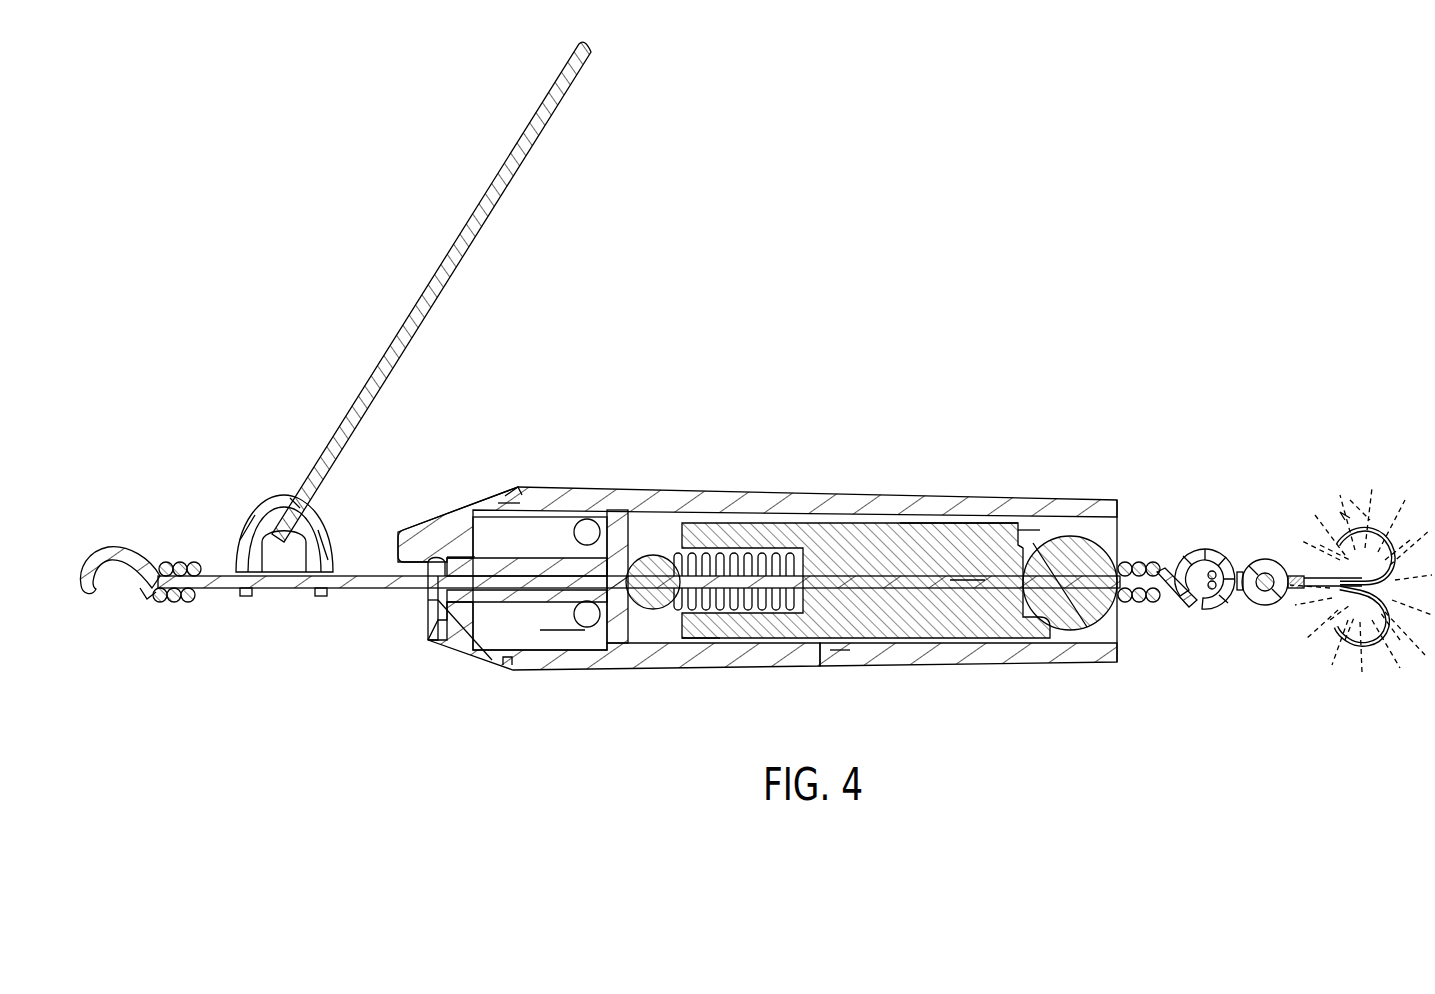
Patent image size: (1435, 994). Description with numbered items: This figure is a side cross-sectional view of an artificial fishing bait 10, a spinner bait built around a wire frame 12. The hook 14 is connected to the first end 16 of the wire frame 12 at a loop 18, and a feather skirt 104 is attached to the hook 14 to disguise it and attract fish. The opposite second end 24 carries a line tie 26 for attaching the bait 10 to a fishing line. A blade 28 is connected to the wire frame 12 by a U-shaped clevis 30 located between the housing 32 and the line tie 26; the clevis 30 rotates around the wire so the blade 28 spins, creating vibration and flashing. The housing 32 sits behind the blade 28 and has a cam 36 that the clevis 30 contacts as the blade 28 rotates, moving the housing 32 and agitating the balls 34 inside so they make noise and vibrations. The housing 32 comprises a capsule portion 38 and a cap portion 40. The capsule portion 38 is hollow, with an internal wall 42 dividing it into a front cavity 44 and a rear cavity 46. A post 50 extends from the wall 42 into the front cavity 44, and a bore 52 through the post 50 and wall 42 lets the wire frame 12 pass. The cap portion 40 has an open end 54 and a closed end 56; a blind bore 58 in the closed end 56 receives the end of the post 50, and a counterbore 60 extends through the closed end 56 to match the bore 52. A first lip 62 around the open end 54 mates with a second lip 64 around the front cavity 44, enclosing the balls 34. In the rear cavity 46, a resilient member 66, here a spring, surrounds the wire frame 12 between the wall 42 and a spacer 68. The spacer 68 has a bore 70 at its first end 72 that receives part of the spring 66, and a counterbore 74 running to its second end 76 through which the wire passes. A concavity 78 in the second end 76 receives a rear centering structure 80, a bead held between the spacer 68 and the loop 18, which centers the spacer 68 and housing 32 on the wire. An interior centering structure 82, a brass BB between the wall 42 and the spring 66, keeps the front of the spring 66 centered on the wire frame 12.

The artificial fishing bait 10 is at (796, 434).
The wire frame 12 is at (890, 590).
The hook 14 is at (1348, 525).
The first end 16 is at (1203, 622).
The loop 18 is at (1203, 552).
The second end 24 is at (178, 641).
The line tie 26 is at (127, 548).
The blade 28 is at (465, 262).
The clevis 30 is at (312, 520).
The housing 32 is at (618, 655).
The ball 34 is at (592, 520).
The cam 36 is at (413, 528).
The capsule portion 38 is at (1028, 657).
The cap portion 40 is at (468, 650).
The internal wall 42 is at (600, 610).
The front cavity 44 is at (563, 630).
The rear cavity 46 is at (838, 647).
The post 50 is at (535, 565).
The bore 52 is at (515, 605).
The open end 54 is at (517, 480).
The closed end 56 is at (425, 628).
The blind bore 58 is at (462, 556).
The counterbore 60 is at (434, 598).
The first lip 62 is at (510, 660).
The second lip 64 is at (507, 500).
The resilient member 66 is at (800, 568).
The spacer 68 is at (962, 540).
The bore 70 is at (740, 553).
The first end 72 is at (695, 650).
The counterbore 74 is at (968, 583).
The second end 76 is at (1033, 527).
The concavity 78 is at (1030, 547).
The rear centering structure 80 is at (1090, 558).
The interior centering structure 82 is at (655, 600).
The feather skirt 104 is at (1425, 510).